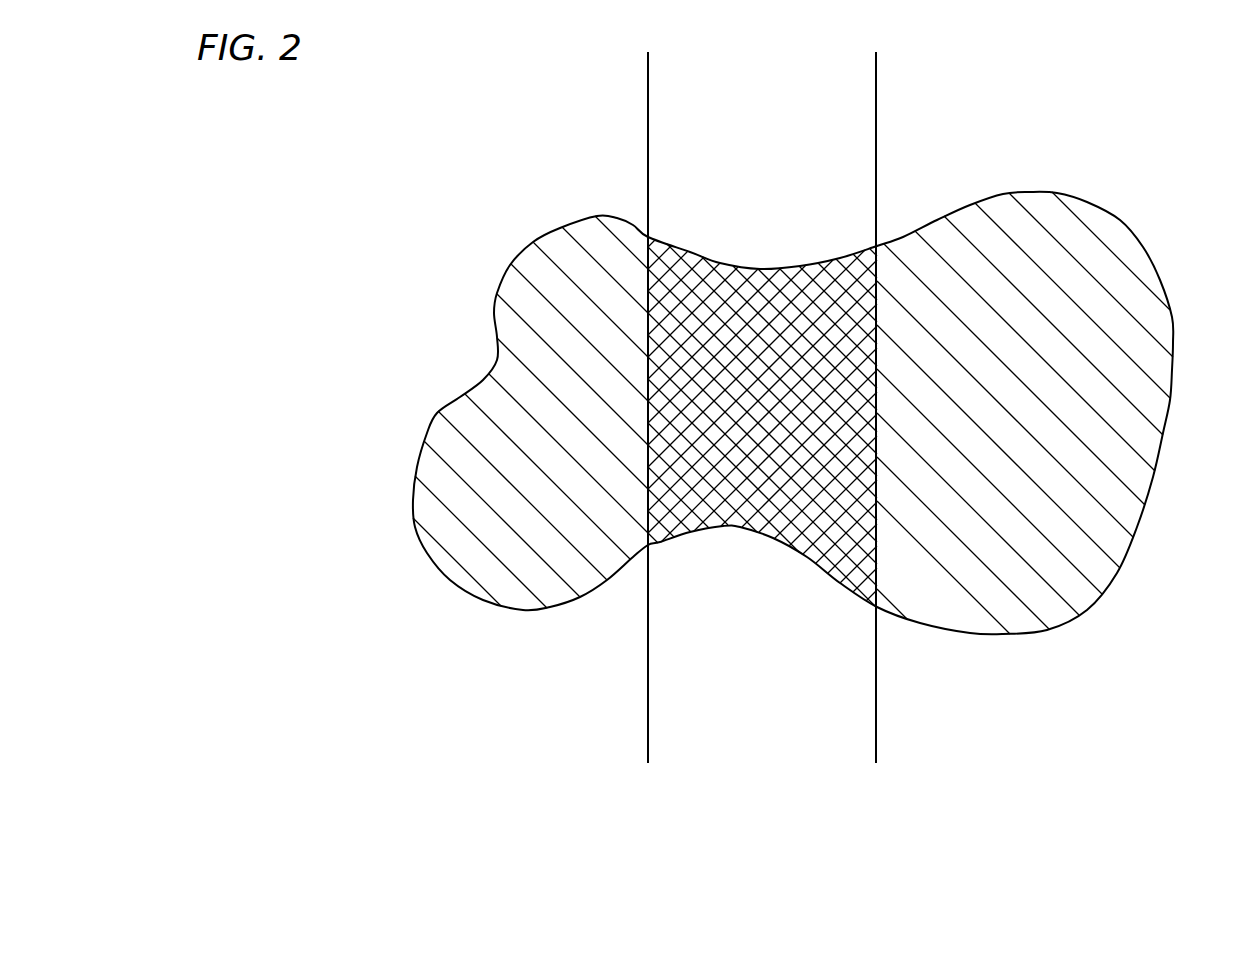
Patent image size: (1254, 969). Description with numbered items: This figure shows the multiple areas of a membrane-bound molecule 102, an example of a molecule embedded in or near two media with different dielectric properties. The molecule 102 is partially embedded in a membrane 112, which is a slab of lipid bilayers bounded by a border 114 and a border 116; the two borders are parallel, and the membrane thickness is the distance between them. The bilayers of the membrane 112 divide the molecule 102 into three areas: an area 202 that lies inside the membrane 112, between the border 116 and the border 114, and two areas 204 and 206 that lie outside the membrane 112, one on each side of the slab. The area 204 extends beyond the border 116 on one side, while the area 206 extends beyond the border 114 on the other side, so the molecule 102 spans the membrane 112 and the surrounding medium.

The molecule 102 is at (1057, 192).
The membrane 112 is at (854, 85).
The border 114 is at (877, 118).
The border 116 is at (648, 158).
The area inside the membrane 202 is at (809, 505).
The area outside the membrane 204 is at (515, 500).
The area outside the membrane 206 is at (1058, 468).